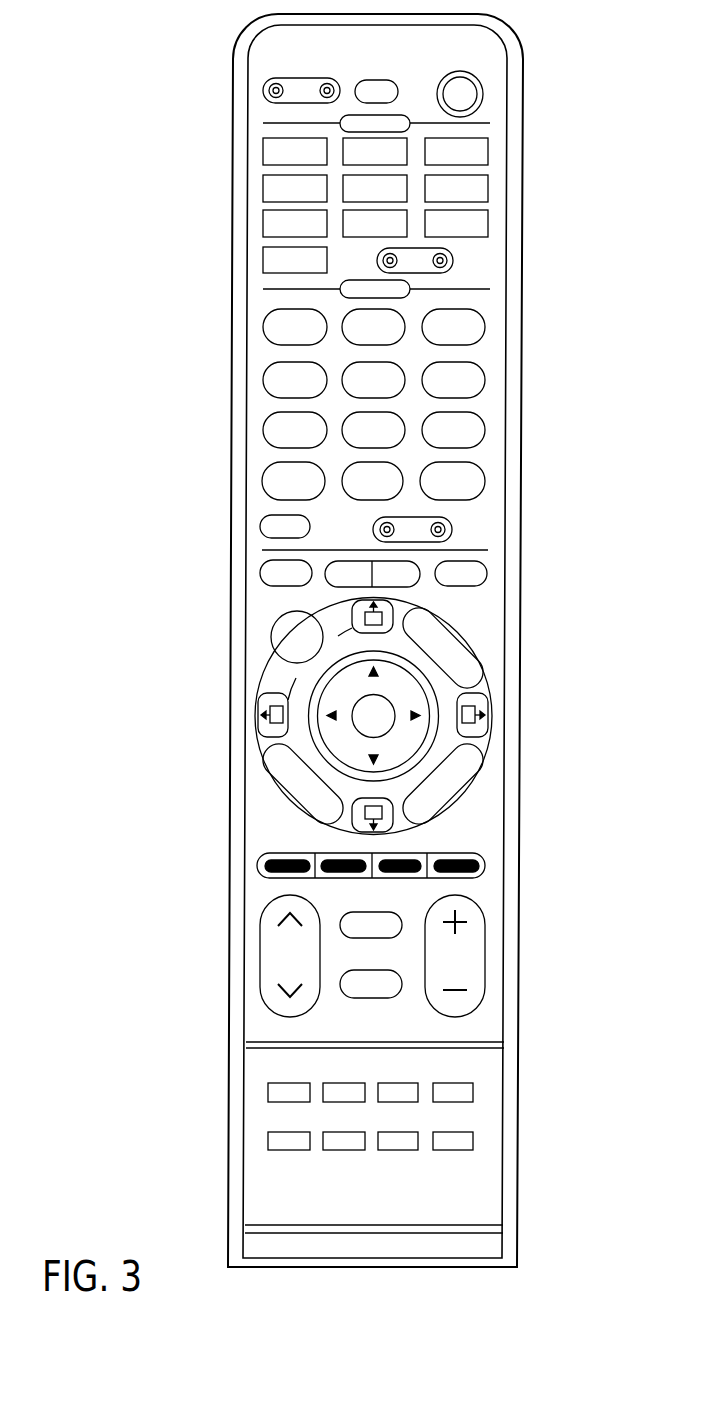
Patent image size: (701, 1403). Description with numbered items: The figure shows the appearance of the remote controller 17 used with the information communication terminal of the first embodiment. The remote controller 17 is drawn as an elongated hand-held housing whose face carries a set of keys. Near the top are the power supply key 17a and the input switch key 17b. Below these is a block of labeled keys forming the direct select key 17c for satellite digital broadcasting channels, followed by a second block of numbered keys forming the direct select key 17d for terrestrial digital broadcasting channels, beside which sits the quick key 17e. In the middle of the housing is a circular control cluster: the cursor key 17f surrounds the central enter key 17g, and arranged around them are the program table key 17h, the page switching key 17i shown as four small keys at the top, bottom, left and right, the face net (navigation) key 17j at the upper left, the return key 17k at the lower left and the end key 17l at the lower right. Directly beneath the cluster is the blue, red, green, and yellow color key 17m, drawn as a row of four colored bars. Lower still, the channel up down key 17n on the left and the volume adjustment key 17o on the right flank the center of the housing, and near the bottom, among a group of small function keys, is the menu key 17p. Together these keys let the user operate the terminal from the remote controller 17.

The remote controller 17 is at (522, 533).
The power supply key 17a is at (474, 95).
The input switch key 17b is at (263, 93).
The direct select key for satellite digital broadcasting channels 17c is at (497, 196).
The direct select key for terrestrial digital broadcasting channels 17d is at (492, 390).
The quick key 17e is at (262, 527).
The cursor key 17f is at (408, 735).
The enter key 17g is at (388, 699).
The program table key 17h is at (477, 672).
The page switching key 17i is at (393, 607).
The face net (navigation) key 17j is at (280, 638).
The return key 17k is at (278, 770).
The end key 17l is at (468, 765).
The blue, red, green, and yellow color key 17m is at (485, 865).
The channel up down key 17n is at (260, 943).
The volume adjustment key 17o is at (485, 952).
The menu key 17p is at (270, 1143).